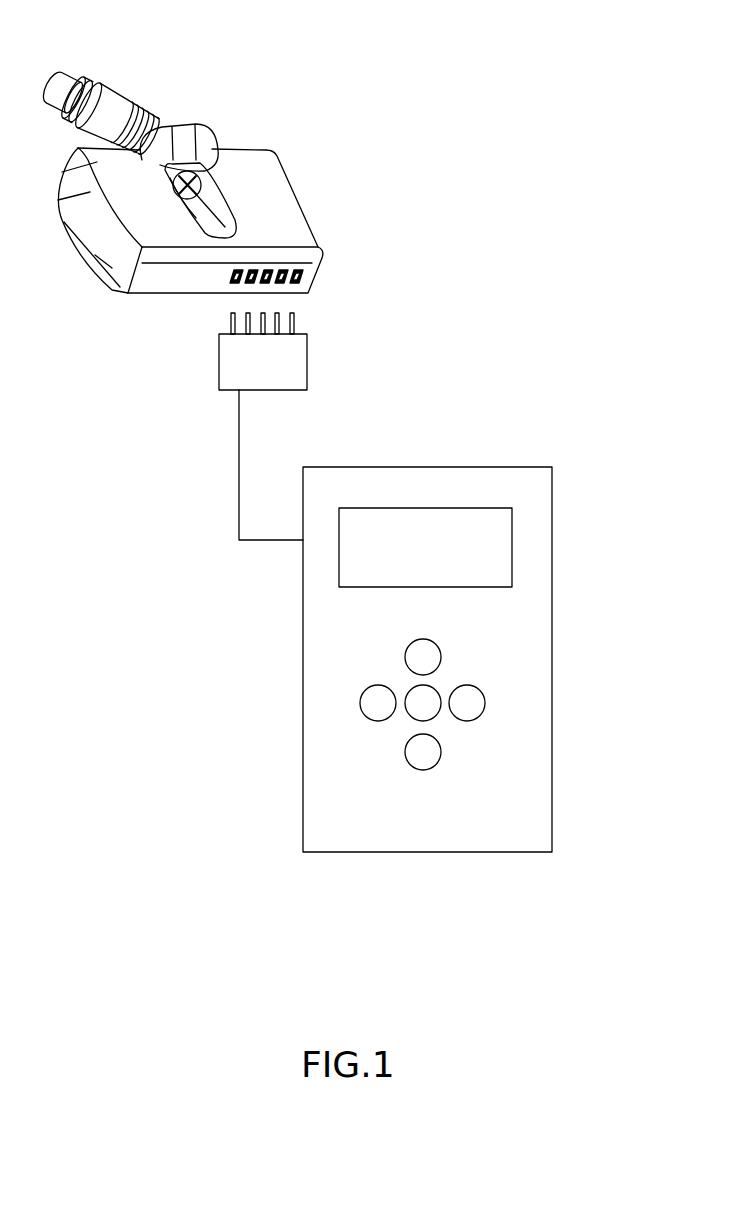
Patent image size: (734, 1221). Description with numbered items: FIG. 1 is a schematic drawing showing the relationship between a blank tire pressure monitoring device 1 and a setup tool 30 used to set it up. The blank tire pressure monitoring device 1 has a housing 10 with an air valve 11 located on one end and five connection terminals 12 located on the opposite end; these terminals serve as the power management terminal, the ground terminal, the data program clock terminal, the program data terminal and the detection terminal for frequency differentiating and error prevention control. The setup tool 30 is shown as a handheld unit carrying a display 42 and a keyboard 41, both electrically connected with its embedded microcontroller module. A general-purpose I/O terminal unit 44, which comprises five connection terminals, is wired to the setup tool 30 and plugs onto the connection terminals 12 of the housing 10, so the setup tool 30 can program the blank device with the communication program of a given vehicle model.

The blank tire pressure monitoring device 1 is at (345, 193).
The housing 10 is at (282, 157).
The air valve 11 is at (118, 100).
The connection terminals 12 is at (300, 280).
The general-purpose I/O terminal unit 44 is at (298, 368).
The setup tool 30 is at (477, 477).
The display 42 is at (498, 555).
The keyboard 41 is at (488, 710).